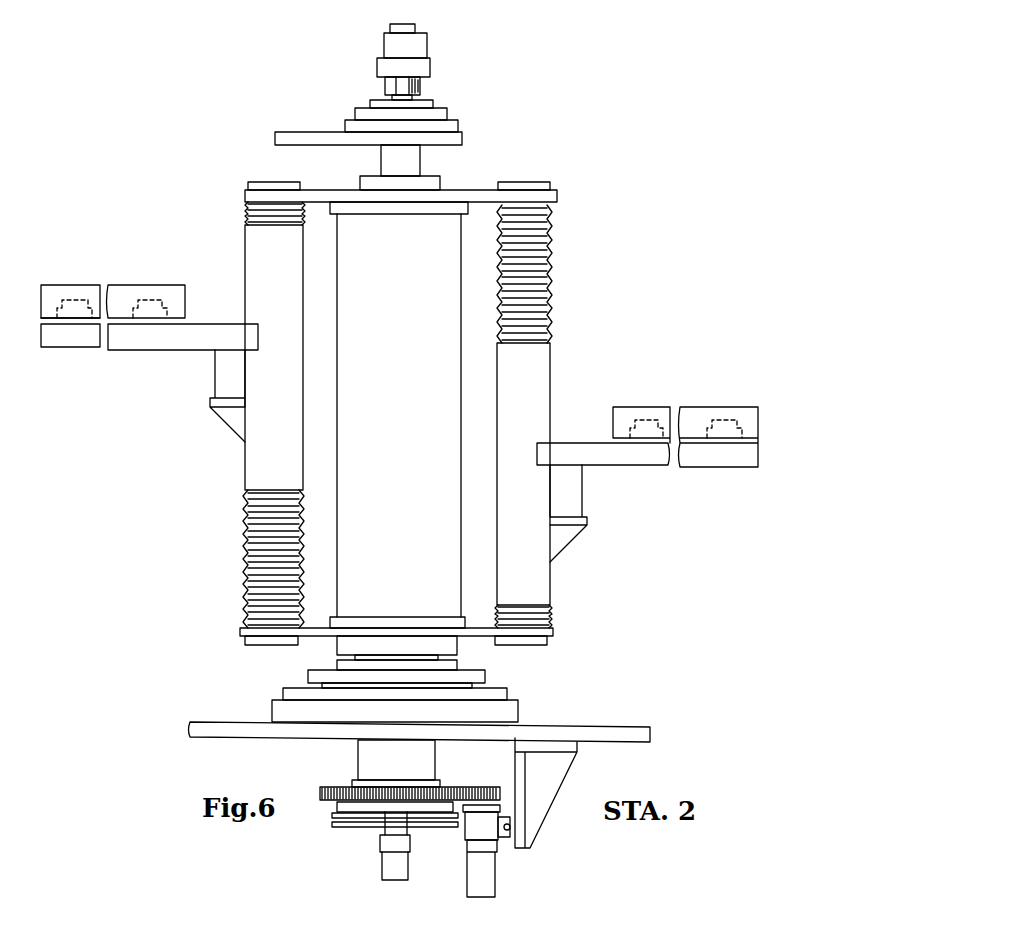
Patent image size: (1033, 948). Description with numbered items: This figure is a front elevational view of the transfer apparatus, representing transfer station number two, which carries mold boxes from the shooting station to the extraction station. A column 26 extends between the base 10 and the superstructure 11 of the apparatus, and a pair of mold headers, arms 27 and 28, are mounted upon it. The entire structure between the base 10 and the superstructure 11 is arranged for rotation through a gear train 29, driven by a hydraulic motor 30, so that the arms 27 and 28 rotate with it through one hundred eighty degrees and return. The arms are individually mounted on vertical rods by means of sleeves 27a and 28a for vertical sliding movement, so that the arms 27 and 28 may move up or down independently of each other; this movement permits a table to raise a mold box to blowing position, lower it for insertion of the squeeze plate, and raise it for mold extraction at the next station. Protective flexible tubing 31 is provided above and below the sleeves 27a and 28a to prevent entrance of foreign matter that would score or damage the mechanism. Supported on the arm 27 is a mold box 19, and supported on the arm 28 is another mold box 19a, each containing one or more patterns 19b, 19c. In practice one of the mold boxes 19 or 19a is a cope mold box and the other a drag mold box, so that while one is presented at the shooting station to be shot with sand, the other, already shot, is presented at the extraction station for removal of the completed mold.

The base 10 is at (620, 728).
The superstructure 11 is at (283, 136).
The mold box 19 is at (50, 290).
The mold box 19a is at (700, 417).
The pattern 19b is at (70, 308).
The pattern 19c is at (648, 410).
The column 26 is at (420, 159).
The mold header arm 27 is at (65, 340).
The sleeve 27a is at (256, 457).
The mold header arm 28 is at (648, 457).
The sleeve 28a is at (545, 375).
The gear train 29 is at (463, 786).
The hydraulic motor 30 is at (490, 866).
The protective flexible tubing 31 is at (247, 208).